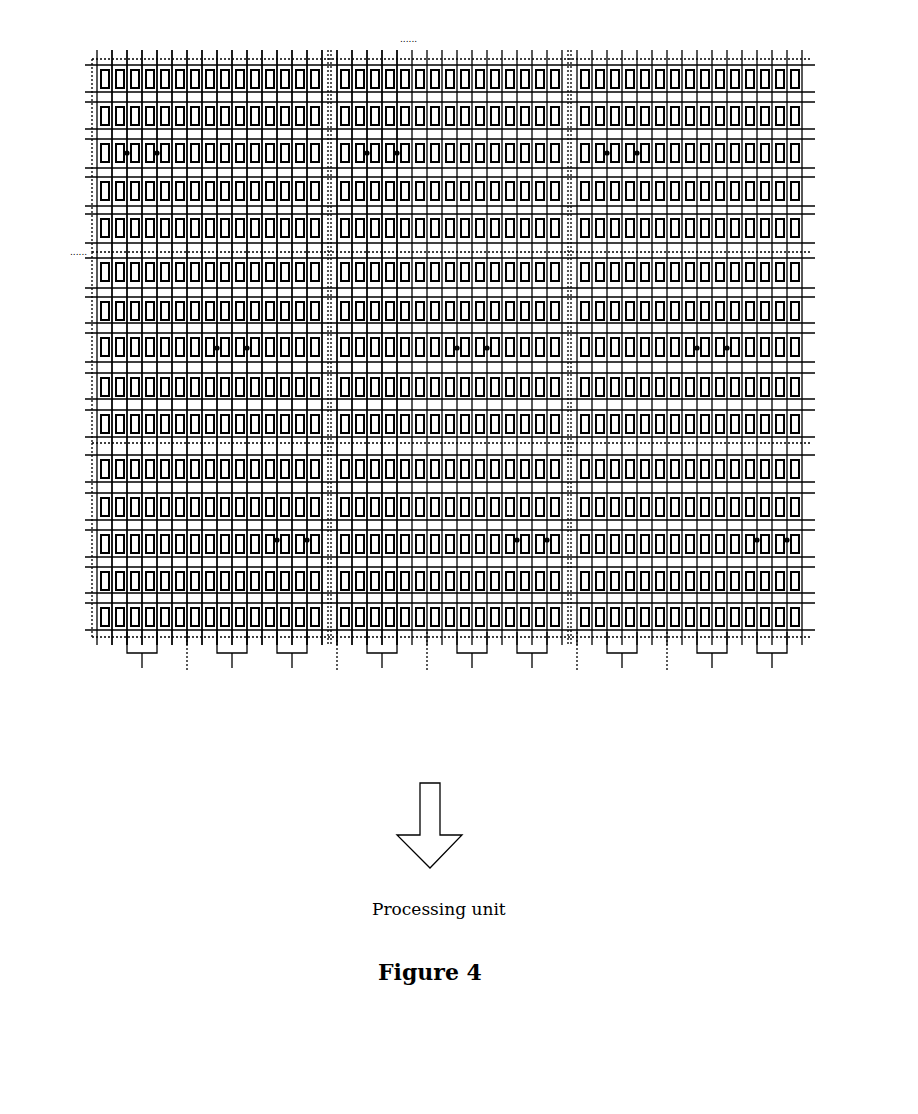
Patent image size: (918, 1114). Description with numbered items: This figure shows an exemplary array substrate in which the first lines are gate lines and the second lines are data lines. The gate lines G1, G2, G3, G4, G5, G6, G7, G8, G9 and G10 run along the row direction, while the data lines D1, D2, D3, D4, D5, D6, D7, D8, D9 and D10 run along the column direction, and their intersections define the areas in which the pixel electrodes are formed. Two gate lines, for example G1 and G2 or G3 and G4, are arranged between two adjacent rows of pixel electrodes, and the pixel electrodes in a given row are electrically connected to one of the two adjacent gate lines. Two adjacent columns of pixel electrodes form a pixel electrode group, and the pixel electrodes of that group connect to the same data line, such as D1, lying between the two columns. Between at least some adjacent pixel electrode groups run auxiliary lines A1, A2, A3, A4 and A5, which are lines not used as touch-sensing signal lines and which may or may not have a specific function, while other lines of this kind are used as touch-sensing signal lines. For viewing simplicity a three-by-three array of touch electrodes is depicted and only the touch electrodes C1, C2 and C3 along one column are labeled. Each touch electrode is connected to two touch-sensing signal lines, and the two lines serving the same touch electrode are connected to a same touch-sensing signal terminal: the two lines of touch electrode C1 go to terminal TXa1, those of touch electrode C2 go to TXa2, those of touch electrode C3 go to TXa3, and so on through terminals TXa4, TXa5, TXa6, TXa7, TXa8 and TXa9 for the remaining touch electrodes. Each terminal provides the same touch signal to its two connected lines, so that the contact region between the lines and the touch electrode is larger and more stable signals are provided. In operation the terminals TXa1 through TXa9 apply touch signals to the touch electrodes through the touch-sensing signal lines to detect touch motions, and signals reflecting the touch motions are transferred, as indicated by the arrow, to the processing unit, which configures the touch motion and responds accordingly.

The touch electrode C1 is at (92, 58).
The touch electrode C2 is at (92, 304).
The touch electrode C3 is at (92, 504).
The gate line G1 is at (438, 66).
The gate line G2 is at (438, 93).
The gate line G3 is at (438, 103).
The gate line G4 is at (438, 130).
The gate line G5 is at (438, 140).
The gate line G6 is at (438, 169).
The gate line G7 is at (438, 178).
The gate line G8 is at (438, 207).
The gate line G9 is at (438, 215).
The gate line G10 is at (437, 244).
The data line D1 is at (118, 339).
The data line D2 is at (147, 339).
The data line D3 is at (176, 339).
The data line D4 is at (205, 339).
The data line D5 is at (235, 339).
The data line D6 is at (264, 339).
The data line D7 is at (294, 339).
The data line D8 is at (324, 339).
The data line D9 is at (354, 339).
The data line D10 is at (382, 339).
The touch-sensing signal terminal TXa1 is at (141, 662).
The touch-sensing signal terminal TXa2 is at (231, 662).
The touch-sensing signal terminal TXa3 is at (291, 662).
The touch-sensing signal terminal TXa4 is at (381, 662).
The touch-sensing signal terminal TXa5 is at (471, 662).
The touch-sensing signal terminal TXa6 is at (531, 662).
The touch-sensing signal terminal TXa7 is at (621, 662).
The touch-sensing signal terminal TXa8 is at (711, 662).
The touch-sensing signal terminal TXa9 is at (771, 662).
The auxiliary line A1 is at (187, 662).
The auxiliary line A2 is at (337, 662).
The auxiliary line A3 is at (427, 662).
The auxiliary line A4 is at (577, 662).
The auxiliary line A5 is at (667, 662).